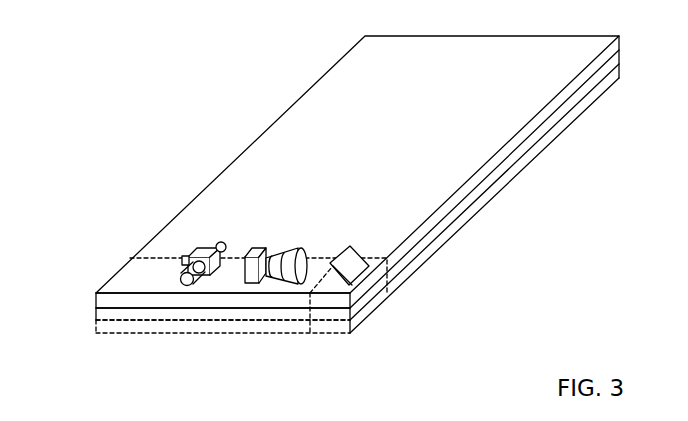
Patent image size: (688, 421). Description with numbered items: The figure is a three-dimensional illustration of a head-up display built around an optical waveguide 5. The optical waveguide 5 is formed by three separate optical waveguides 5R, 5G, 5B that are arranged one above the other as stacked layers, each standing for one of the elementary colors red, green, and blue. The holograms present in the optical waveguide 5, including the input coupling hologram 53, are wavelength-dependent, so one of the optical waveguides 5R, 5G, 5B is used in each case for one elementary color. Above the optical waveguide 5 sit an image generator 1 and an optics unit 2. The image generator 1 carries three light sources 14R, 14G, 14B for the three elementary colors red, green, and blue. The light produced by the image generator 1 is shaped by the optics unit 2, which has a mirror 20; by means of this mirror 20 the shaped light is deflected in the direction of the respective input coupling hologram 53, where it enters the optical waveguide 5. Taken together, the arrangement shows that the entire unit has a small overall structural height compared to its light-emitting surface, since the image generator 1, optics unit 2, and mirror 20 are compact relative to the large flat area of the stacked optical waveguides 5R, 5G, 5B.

The image generator 1 is at (202, 247).
The optics unit 2 is at (278, 247).
The optical waveguide 5 is at (113, 265).
The optical waveguide 5R is at (98, 300).
The optical waveguide 5G is at (100, 315).
The optical waveguide 5B is at (102, 332).
The light source 14B is at (182, 257).
The light source 14G is at (186, 286).
The light source 14R is at (225, 252).
The mirror 20 is at (358, 254).
The input coupling hologram 53 is at (342, 289).